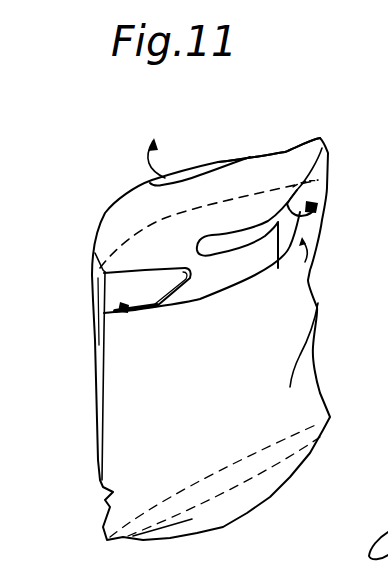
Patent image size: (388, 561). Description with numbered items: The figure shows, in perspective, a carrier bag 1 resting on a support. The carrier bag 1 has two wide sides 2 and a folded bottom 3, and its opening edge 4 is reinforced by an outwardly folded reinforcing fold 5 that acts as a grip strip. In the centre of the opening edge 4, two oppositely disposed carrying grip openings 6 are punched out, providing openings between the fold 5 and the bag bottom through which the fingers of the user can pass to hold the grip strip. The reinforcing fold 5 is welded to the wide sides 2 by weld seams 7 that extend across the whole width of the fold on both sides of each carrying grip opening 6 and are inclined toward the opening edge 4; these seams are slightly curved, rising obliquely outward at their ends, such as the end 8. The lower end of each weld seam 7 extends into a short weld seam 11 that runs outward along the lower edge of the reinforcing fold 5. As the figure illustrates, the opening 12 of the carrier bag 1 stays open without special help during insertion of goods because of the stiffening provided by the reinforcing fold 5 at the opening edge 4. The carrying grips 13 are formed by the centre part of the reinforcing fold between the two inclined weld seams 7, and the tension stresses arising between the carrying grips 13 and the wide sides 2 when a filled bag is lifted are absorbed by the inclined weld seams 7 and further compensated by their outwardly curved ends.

The carrier bag 1 is at (78, 445).
The wide sides 2 is at (117, 368).
The folded bottom 3 is at (303, 462).
The opening edge 4 is at (273, 155).
The reinforcing fold 5 is at (97, 299).
The carrying grip openings 6 is at (230, 240).
The weld seams 7 is at (163, 297).
The end of weld seam 8 is at (185, 268).
The short weld seam 11 is at (125, 311).
The opening 12 is at (152, 225).
The carrying grips 13 is at (272, 286).